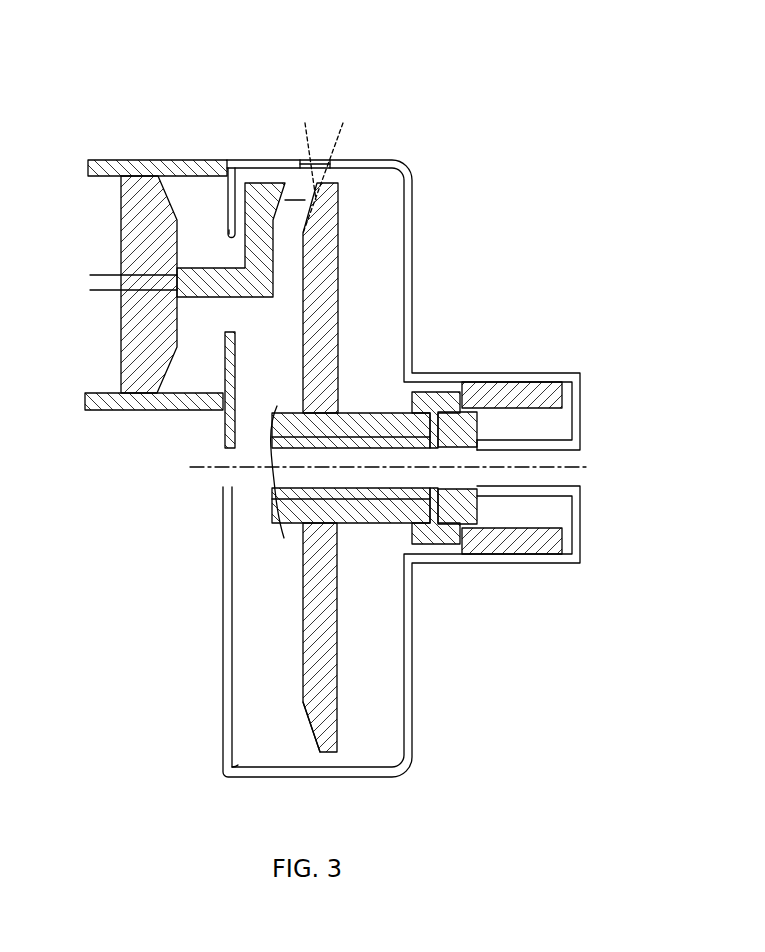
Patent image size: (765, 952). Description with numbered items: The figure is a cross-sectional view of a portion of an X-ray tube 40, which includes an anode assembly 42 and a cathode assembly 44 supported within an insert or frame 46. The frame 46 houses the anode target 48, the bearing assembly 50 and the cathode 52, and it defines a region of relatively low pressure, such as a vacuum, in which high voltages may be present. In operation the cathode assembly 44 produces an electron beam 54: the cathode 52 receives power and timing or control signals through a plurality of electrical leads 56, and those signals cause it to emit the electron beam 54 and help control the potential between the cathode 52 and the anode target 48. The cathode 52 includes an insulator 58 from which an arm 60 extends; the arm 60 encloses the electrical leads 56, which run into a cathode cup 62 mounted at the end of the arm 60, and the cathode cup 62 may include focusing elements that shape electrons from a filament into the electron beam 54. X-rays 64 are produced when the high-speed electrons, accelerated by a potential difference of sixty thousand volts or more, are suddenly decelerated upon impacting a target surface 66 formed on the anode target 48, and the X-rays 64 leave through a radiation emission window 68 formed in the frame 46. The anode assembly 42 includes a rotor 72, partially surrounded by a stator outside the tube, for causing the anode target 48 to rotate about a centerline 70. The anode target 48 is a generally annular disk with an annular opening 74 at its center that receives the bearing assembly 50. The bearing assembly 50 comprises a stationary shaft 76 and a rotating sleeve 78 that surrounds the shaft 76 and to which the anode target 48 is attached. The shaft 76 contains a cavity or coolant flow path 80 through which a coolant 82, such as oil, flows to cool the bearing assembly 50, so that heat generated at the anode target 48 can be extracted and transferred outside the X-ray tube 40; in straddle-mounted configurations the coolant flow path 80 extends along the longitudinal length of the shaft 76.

The X-ray tube 40 is at (502, 68).
The anode assembly 42 is at (418, 162).
The cathode assembly 44 is at (188, 140).
The frame 46 is at (245, 778).
The anode target 48 is at (352, 298).
The bearing assembly 50 is at (486, 506).
The cathode 52 is at (236, 230).
The electron beam 54 is at (292, 210).
The electrical leads 56 is at (97, 277).
The insulator 58 is at (121, 205).
The arm 60 is at (252, 330).
The cathode cup 62 is at (250, 183).
The X-rays 64 is at (350, 132).
The target surface 66 is at (296, 730).
The radiation emission window 68 is at (356, 160).
The centerline 70 is at (273, 432).
The rotor 72 is at (518, 380).
The annular opening 74 is at (293, 408).
The shaft 76 is at (570, 486).
The sleeve 78 is at (372, 524).
The coolant flow path 80 is at (580, 466).
The coolant 82 is at (510, 458).